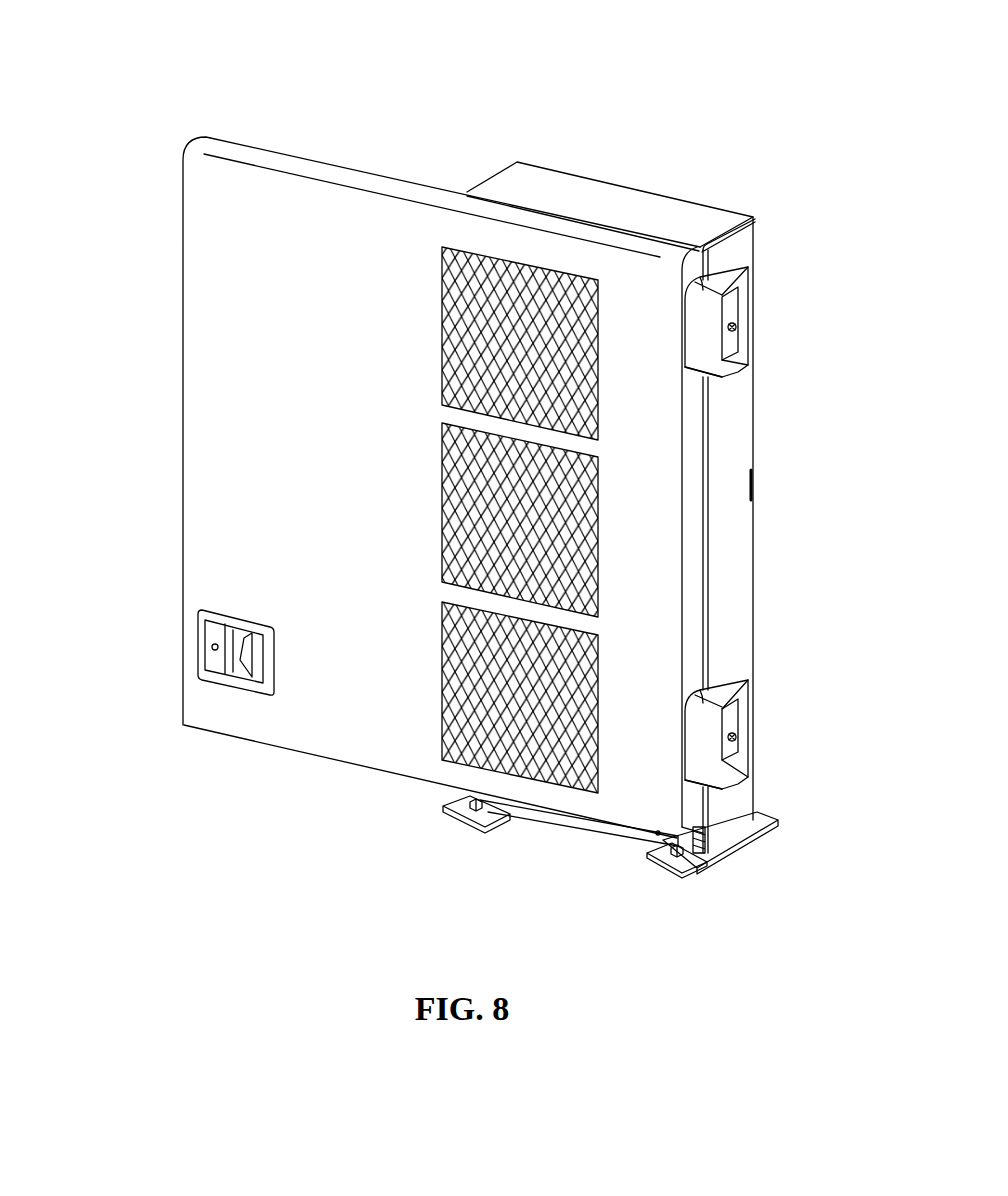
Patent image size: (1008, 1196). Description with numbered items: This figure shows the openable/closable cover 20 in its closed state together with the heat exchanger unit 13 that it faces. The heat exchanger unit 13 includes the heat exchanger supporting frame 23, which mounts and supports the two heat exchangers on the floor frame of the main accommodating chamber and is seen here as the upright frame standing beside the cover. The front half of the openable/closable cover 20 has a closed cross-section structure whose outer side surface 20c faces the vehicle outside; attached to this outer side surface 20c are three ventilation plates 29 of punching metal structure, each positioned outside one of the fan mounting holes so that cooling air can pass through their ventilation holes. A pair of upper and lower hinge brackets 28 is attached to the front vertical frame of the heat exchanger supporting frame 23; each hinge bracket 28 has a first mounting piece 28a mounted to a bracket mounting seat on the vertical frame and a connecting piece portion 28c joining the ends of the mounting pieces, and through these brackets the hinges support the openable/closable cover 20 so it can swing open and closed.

The openable/closable cover 20 is at (285, 122).
The outer side surface 20c is at (217, 399).
The heat exchanger unit 13 is at (614, 146).
The ventilation plate 29 is at (465, 293).
The heat exchanger supporting frame 23 is at (733, 443).
The hinge bracket 28 is at (741, 264).
The first mounting piece 28a is at (735, 312).
The connecting piece portion 28c is at (751, 268).